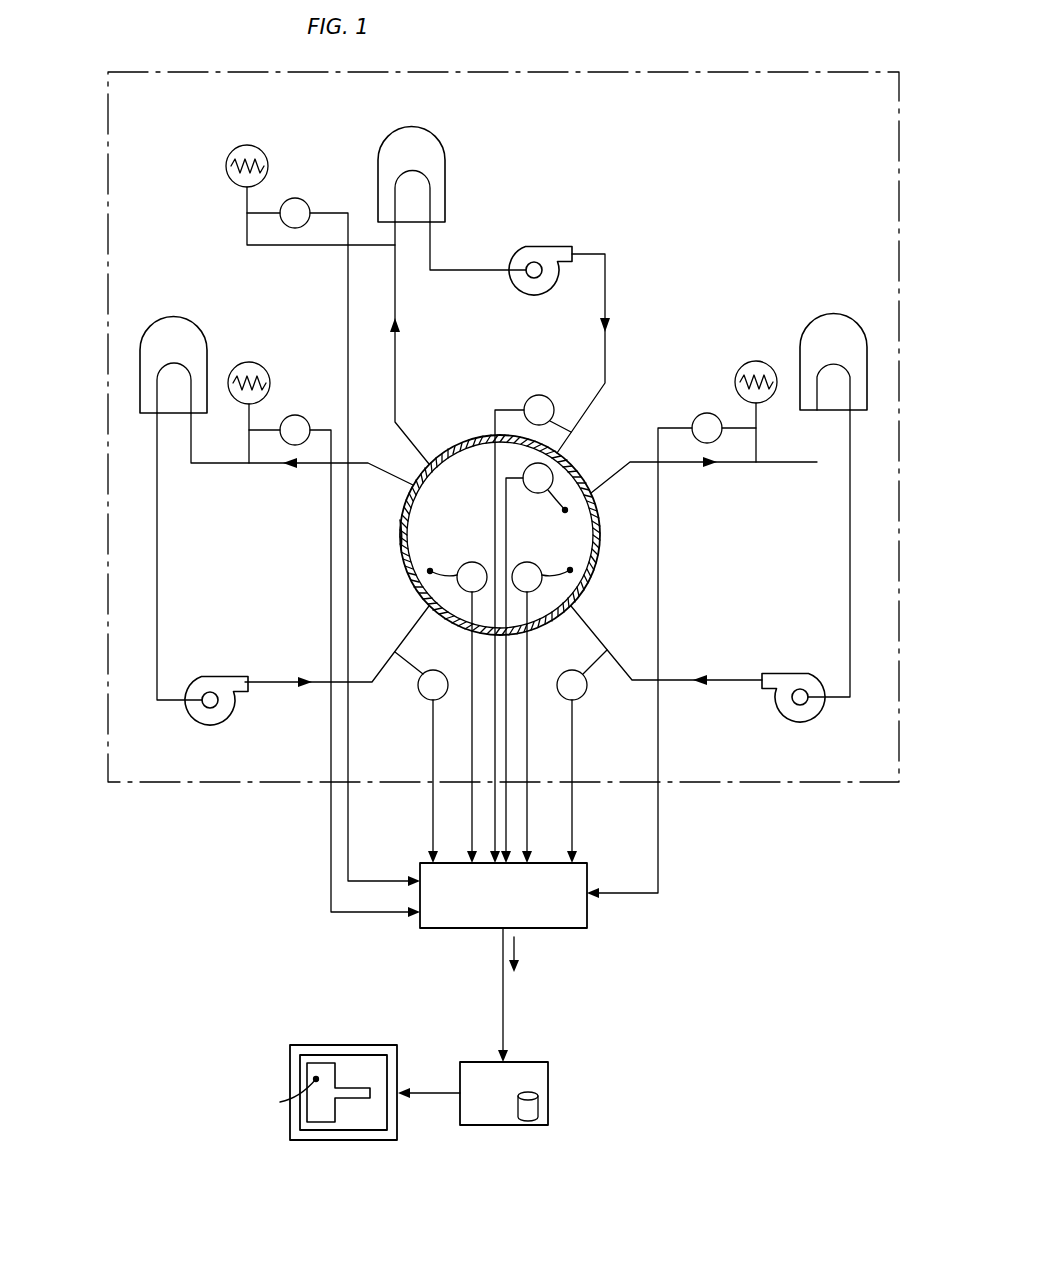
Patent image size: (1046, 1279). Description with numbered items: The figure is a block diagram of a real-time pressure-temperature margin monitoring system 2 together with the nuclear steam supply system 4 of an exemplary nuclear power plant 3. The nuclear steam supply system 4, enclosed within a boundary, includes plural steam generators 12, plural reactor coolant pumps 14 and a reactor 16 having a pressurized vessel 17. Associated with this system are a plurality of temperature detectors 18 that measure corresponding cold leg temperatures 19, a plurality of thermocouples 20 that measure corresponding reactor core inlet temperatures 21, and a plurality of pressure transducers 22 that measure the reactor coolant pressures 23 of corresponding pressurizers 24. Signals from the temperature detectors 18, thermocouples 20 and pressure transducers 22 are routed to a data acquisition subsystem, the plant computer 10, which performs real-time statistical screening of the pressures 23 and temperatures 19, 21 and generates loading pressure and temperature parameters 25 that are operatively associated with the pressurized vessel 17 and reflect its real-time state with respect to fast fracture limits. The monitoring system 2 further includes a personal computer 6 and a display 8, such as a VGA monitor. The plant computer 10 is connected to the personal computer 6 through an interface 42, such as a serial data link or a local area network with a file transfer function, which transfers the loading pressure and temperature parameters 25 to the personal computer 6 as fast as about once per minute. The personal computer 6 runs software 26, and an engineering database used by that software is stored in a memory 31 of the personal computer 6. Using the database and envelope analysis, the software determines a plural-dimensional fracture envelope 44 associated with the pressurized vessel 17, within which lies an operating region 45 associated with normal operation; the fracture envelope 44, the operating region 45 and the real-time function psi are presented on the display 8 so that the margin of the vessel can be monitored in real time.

The real-time pressure-temperature margin monitoring system 2 is at (564, 1148).
The nuclear power plant 3 is at (684, 54).
The nuclear steam supply system 4 is at (757, 783).
The personal computer 6 is at (546, 1062).
The display 8 is at (306, 1141).
The plant computer 10 is at (424, 931).
The steam generators 12 is at (412, 131).
The reactor coolant pumps 14 is at (538, 246).
The reactor 16 is at (445, 432).
The pressurized vessel 17 is at (400, 527).
The temperature detectors 18 is at (546, 397).
The cold leg temperatures 19 is at (591, 405).
The thermocouples 20 is at (539, 494).
The reactor core inlet temperatures 21 is at (598, 498).
The pressure transducers 22 is at (299, 198).
The reactor coolant pressures 23 is at (246, 192).
The pressurizers 24 is at (248, 146).
The loading pressure and temperature parameters 25 is at (518, 941).
The software 26 is at (484, 1120).
The memory 31 is at (539, 1110).
The interface 42 is at (503, 1006).
The fracture envelope 44 is at (338, 1112).
The operating region 45 is at (328, 1064).